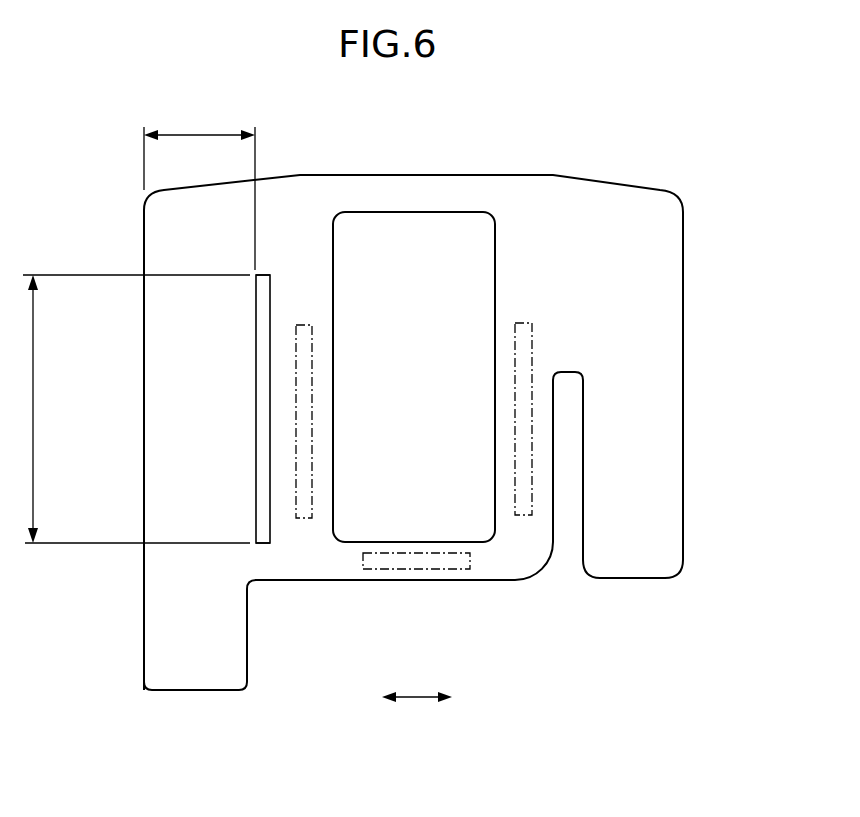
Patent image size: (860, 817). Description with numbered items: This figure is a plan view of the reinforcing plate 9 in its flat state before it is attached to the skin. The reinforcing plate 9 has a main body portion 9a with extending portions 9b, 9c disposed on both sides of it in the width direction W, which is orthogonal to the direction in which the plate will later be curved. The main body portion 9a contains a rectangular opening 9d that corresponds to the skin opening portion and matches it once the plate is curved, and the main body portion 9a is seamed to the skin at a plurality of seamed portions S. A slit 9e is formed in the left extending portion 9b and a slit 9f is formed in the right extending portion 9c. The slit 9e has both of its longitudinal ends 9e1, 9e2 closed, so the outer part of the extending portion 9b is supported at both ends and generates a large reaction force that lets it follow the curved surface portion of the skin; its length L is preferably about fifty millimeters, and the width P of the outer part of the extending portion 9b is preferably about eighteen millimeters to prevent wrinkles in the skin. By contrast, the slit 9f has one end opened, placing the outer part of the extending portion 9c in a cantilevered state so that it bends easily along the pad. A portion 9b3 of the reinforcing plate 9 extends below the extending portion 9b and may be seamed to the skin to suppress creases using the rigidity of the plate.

The reinforcing plate 9 is at (714, 246).
The main body portion 9a is at (470, 558).
The extending portion 9b is at (193, 388).
The portion 9b3 is at (218, 655).
The extending portion 9c is at (637, 473).
The opening 9d is at (413, 258).
The slit 9e is at (253, 430).
The end of slit 9e1 is at (263, 277).
The end of slit 9e2 is at (263, 540).
The slit 9f is at (566, 490).
The seamed portions S is at (303, 325).
The width P is at (199, 188).
The length L is at (128, 409).
The width direction W is at (418, 700).